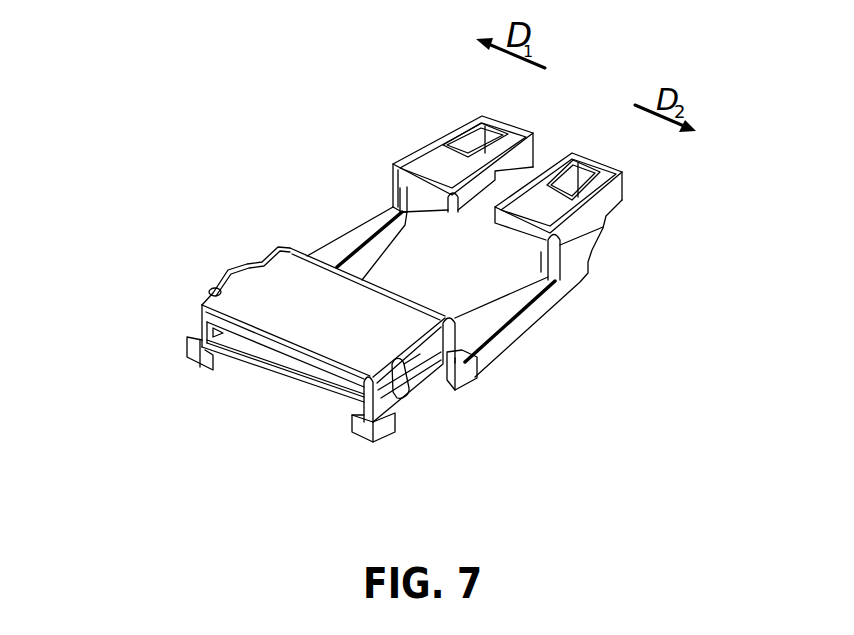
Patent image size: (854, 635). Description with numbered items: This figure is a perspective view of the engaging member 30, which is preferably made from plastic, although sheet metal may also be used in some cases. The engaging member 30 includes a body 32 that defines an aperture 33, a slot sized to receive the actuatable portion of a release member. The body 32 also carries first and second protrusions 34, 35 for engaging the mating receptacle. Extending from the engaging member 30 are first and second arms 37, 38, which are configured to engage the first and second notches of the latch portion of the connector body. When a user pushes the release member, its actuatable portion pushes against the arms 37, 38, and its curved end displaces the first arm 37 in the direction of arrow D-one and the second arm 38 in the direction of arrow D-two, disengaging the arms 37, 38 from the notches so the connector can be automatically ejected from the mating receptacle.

The engaging member 30 is at (148, 124).
The body 32 is at (213, 302).
The aperture 33 is at (355, 387).
The first protrusion 34 is at (233, 280).
The second protrusion 35 is at (426, 376).
The first arm 37 is at (415, 160).
The second arm 38 is at (598, 218).